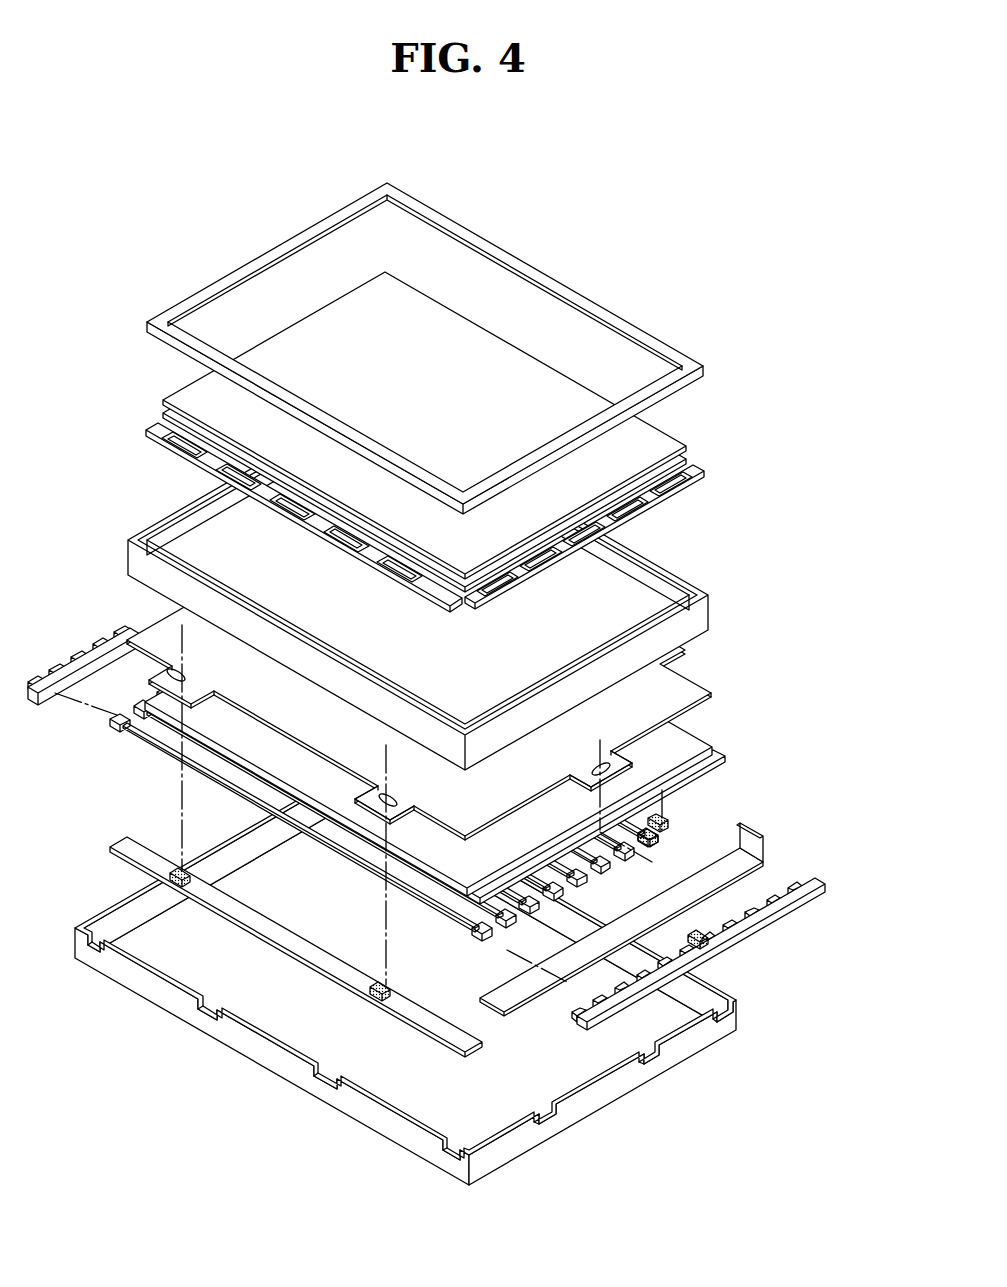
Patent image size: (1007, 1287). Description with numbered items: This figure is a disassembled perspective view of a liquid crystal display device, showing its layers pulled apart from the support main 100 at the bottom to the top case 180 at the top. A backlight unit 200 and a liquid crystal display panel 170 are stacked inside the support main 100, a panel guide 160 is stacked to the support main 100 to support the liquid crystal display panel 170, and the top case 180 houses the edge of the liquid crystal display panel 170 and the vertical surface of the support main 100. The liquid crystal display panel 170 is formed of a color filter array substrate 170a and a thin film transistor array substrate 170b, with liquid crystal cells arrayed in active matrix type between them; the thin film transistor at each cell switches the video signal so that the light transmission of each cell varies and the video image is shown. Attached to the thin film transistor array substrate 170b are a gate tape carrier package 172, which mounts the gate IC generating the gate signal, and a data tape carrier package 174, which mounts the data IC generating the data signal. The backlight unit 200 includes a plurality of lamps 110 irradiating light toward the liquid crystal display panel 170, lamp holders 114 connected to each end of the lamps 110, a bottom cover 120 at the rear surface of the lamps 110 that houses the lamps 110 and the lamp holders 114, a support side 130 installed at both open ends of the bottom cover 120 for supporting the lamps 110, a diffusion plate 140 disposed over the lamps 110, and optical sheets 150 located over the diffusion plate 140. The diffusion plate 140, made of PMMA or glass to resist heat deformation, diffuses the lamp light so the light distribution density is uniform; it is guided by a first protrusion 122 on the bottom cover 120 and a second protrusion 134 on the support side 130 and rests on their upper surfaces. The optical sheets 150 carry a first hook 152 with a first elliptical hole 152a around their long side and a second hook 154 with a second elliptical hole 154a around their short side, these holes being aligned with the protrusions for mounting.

The support main 100 is at (700, 1045).
The lamp 110 is at (652, 800).
The lamp holder 114 is at (670, 818).
The bottom cover 120 is at (700, 855).
The first protrusion 122 is at (378, 998).
The support side 130 is at (808, 868).
The second protrusion 134 is at (710, 945).
The diffusion plate 140 is at (688, 738).
The optical sheets 150 is at (450, 662).
The first hook 152 is at (360, 787).
The first elliptical hole 152a is at (390, 796).
The second hook 154 is at (586, 785).
The second elliptical hole 154a is at (596, 767).
The panel guide 160 is at (704, 613).
The liquid crystal display panel 170 is at (492, 432).
The color filter array substrate 170a is at (656, 432).
The thin film transistor array substrate 170b is at (676, 459).
The gate tape carrier package 172 is at (698, 494).
The data tape carrier package 174 is at (152, 420).
The top case 180 is at (673, 344).
The backlight unit 200 is at (828, 998).